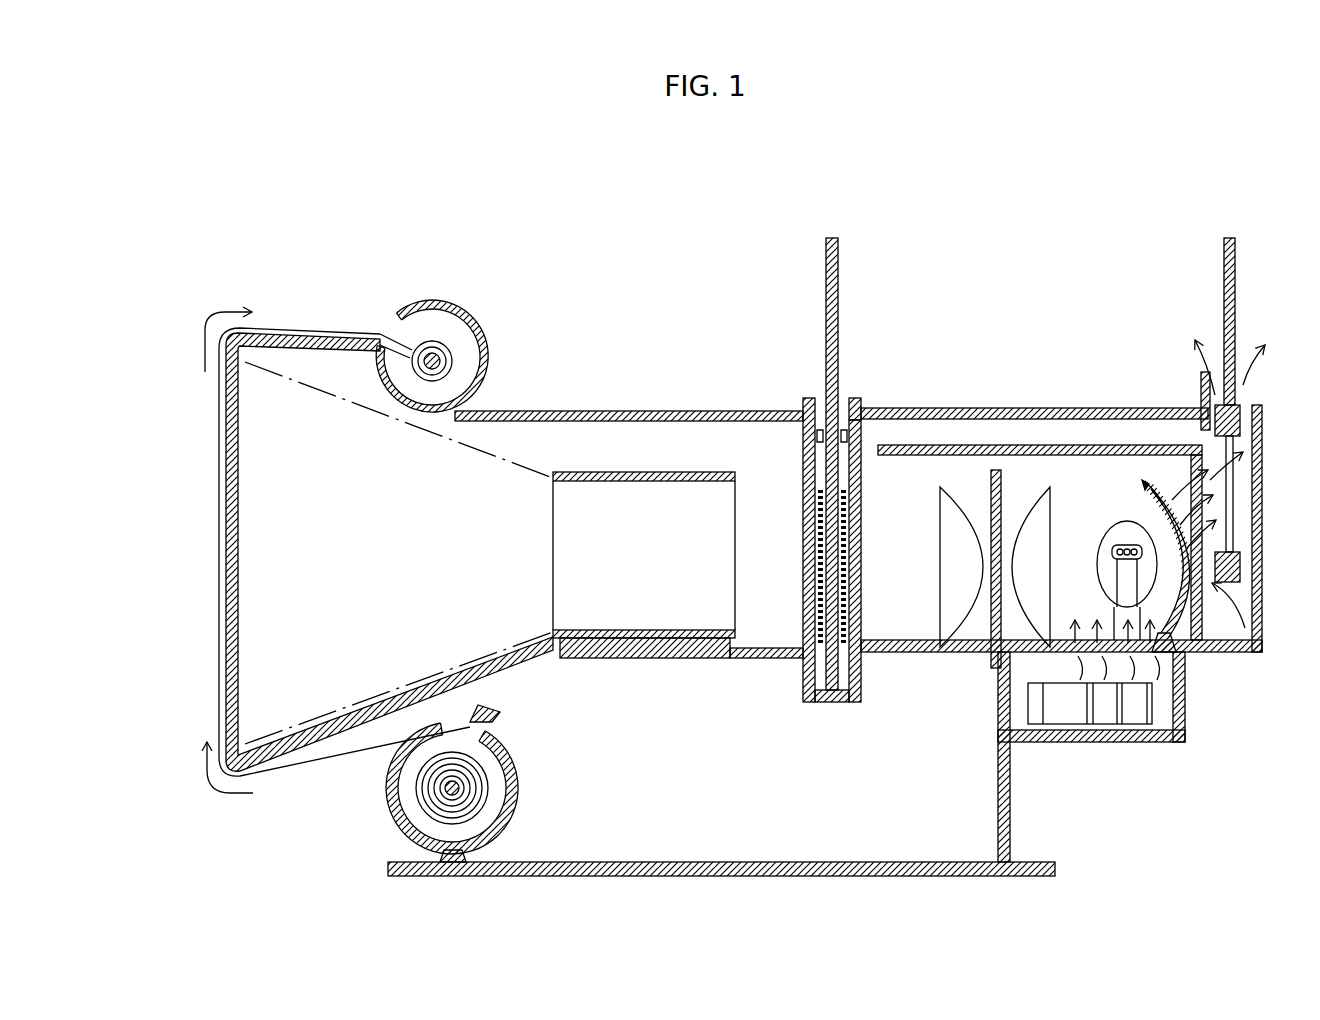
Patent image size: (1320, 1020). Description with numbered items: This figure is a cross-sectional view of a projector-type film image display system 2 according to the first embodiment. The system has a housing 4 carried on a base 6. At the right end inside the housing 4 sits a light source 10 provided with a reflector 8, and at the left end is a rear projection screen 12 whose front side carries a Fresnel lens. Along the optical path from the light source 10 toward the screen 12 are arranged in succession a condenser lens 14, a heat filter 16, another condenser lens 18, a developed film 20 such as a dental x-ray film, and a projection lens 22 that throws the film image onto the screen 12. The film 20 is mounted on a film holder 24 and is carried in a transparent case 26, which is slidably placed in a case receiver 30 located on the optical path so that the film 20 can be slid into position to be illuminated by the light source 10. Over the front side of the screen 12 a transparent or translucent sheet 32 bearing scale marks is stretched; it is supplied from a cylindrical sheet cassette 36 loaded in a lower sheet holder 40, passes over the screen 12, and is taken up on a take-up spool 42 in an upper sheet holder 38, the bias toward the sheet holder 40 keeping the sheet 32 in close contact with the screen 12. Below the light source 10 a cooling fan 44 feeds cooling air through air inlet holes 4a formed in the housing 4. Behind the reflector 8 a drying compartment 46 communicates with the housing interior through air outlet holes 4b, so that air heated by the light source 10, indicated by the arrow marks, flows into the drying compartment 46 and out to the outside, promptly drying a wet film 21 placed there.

The film image display system 2 is at (1098, 222).
The housing 4 is at (600, 410).
The air inlet holes 4a is at (1040, 660).
The air outlet holes 4b is at (1272, 532).
The base 6 is at (740, 877).
The reflector 8 is at (1146, 487).
The light source 10 is at (1120, 540).
The rear projection screen 12 is at (240, 548).
The condenser lens 14 is at (1036, 567).
The heat filter 16 is at (997, 470).
The condenser lens 18 is at (950, 568).
The developed film 20 is at (862, 538).
The wet film 21 is at (1240, 518).
The projection lens 22 is at (672, 470).
The film holder 24 is at (840, 303).
The transparent case 26 is at (852, 400).
The case receiver 30 is at (805, 688).
The sheet 32 is at (222, 583).
The sheet cassette 36 is at (518, 790).
The sheet holder 38 is at (433, 305).
The sheet holder 40 is at (385, 790).
The take-up spool 42 is at (455, 357).
The cooling fan 44 is at (1135, 712).
The drying compartment 46 is at (1250, 465).